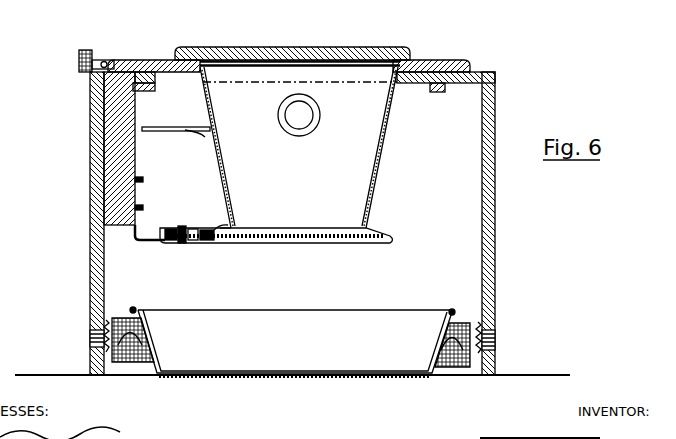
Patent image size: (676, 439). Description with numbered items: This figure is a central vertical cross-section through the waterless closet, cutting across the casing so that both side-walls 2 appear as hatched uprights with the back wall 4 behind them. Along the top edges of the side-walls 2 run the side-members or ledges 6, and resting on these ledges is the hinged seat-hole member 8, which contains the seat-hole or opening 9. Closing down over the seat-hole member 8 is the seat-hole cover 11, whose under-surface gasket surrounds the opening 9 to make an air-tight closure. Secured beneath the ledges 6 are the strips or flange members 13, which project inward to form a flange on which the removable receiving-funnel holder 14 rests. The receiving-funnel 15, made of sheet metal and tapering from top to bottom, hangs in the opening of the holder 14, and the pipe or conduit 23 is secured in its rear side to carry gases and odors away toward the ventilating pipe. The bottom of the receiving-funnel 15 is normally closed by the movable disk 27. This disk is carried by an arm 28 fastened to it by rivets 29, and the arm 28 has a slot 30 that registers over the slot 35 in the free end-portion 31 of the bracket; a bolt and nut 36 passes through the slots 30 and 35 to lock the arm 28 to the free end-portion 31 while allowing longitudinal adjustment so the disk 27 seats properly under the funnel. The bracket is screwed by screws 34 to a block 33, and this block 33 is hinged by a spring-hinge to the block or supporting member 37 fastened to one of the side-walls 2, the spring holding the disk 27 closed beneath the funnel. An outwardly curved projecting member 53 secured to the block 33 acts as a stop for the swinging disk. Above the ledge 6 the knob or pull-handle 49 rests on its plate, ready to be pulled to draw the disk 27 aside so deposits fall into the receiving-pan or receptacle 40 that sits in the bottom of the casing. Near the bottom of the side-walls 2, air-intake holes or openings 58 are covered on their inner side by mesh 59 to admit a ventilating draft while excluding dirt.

The side-walls 2 is at (97, 130).
The back wall 4 is at (453, 209).
The side-members or ledges 6 is at (92, 75).
The seat-hole member 8 is at (153, 60).
The seat-hole or opening 9 is at (349, 68).
The seat-hole cover 11 is at (302, 52).
The strips or flange members 13 is at (149, 88).
The receiving-funnel holder 14 is at (162, 60).
The receiving-funnel 15 is at (212, 115).
The pipe or conduit 23 is at (299, 118).
The movable disk 27 is at (320, 245).
The arm 28 is at (228, 222).
The rivets 29 is at (226, 226).
The slot 30 is at (190, 228).
The free end-portion 31 is at (166, 243).
The block 33 is at (105, 150).
The screws 34 is at (108, 220).
The slot 35 is at (188, 244).
The bolt and nut 36 is at (180, 228).
The block or supporting member 37 is at (108, 165).
The receiving-pan or receptacle 40 is at (365, 312).
The knob or pull-handle 49 is at (86, 52).
The outwardly curved projecting member 53 is at (205, 137).
The holes or openings 58 is at (90, 342).
The mesh 59 is at (132, 310).